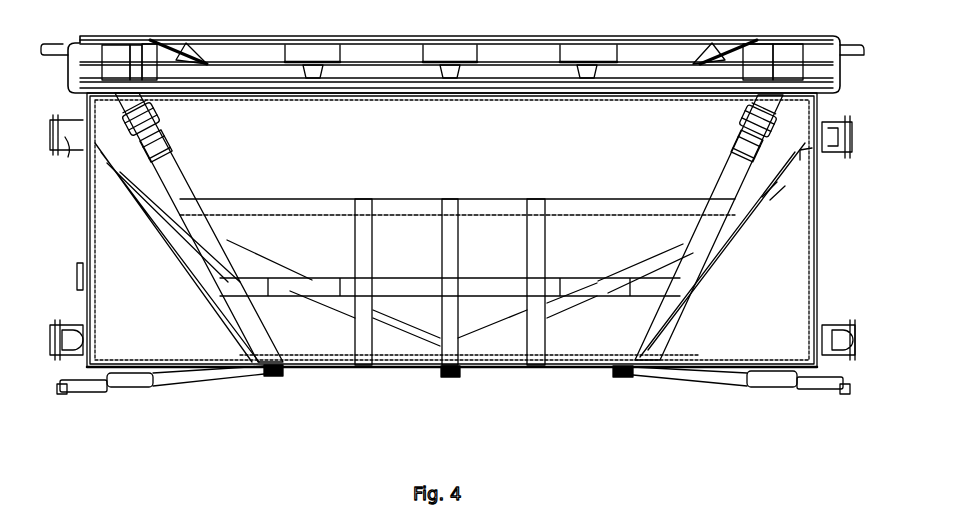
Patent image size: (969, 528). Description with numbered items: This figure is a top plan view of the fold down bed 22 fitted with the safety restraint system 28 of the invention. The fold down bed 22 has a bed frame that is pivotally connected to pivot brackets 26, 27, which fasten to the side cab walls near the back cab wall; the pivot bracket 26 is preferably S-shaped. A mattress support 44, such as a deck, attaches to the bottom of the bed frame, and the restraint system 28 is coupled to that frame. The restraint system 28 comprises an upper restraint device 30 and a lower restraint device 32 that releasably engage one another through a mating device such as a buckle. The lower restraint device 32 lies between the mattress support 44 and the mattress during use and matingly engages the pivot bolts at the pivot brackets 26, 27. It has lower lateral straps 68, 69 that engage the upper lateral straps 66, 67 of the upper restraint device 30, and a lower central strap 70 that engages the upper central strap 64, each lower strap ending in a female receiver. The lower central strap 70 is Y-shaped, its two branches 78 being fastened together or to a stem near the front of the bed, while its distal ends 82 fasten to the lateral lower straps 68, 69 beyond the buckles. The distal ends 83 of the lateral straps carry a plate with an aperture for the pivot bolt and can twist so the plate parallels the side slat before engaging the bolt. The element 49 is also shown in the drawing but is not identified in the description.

The fold down bed 22 is at (707, 342).
The pivot bracket 26 is at (832, 132).
The pivot bracket 27 is at (66, 152).
The restraint system 28 is at (363, 213).
The upper restraint device 30 is at (722, 183).
The lower restraint device 32 is at (688, 298).
The mattress support 44 is at (575, 144).
The latch bracket 49 is at (66, 328).
The upper central strap 64 is at (452, 250).
The upper lateral strap 66 is at (264, 326).
The upper lateral strap 67 is at (633, 328).
The lower lateral strap 68 is at (215, 293).
The lower lateral strap 69 is at (713, 258).
The lower central strap 70 is at (400, 330).
The branches 78 is at (630, 272).
The distal ends 82 is at (158, 222).
The distal ends 83 is at (787, 165).